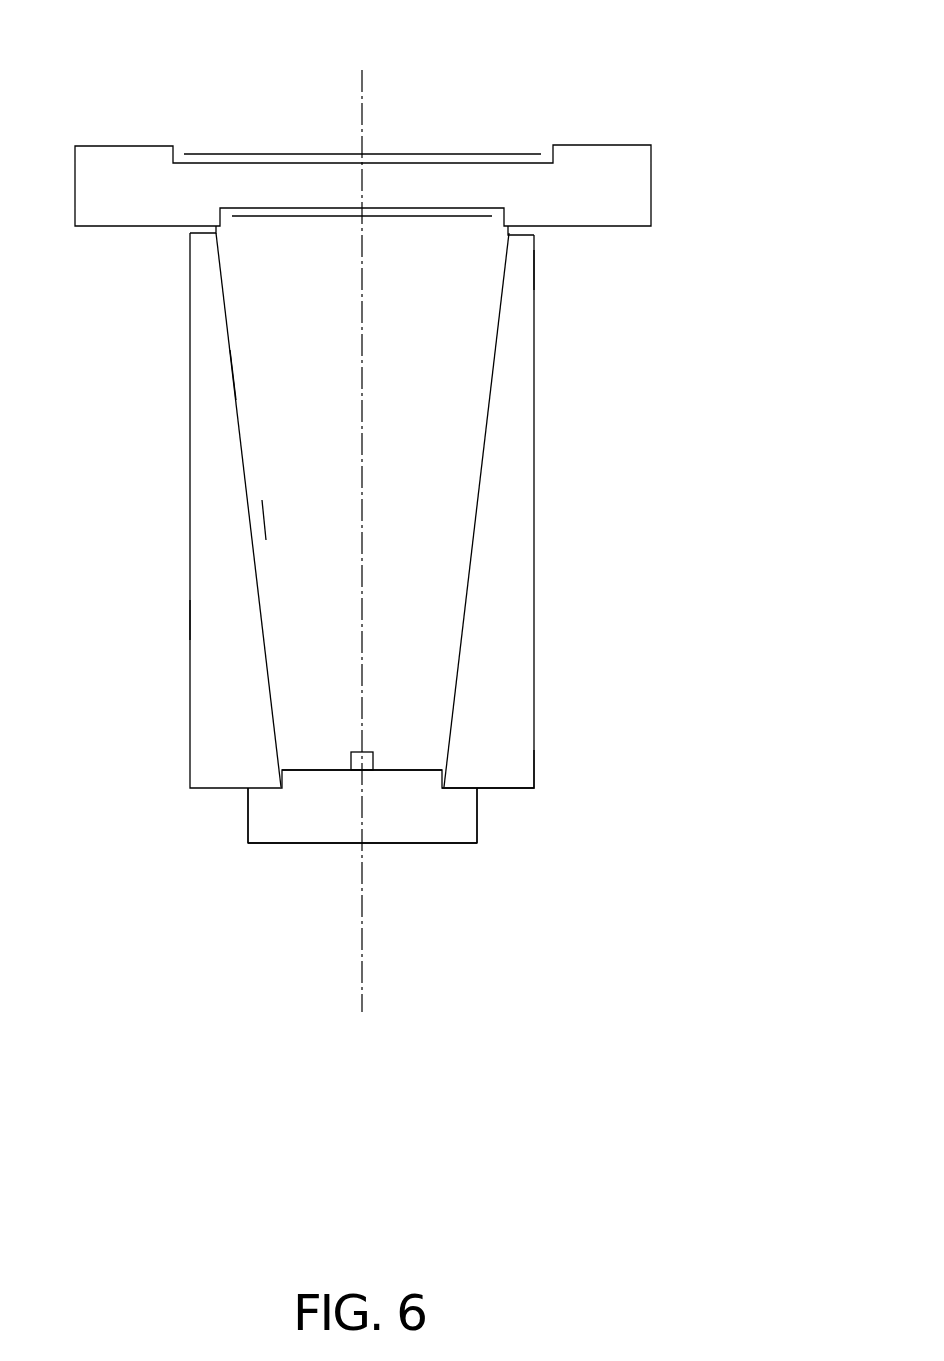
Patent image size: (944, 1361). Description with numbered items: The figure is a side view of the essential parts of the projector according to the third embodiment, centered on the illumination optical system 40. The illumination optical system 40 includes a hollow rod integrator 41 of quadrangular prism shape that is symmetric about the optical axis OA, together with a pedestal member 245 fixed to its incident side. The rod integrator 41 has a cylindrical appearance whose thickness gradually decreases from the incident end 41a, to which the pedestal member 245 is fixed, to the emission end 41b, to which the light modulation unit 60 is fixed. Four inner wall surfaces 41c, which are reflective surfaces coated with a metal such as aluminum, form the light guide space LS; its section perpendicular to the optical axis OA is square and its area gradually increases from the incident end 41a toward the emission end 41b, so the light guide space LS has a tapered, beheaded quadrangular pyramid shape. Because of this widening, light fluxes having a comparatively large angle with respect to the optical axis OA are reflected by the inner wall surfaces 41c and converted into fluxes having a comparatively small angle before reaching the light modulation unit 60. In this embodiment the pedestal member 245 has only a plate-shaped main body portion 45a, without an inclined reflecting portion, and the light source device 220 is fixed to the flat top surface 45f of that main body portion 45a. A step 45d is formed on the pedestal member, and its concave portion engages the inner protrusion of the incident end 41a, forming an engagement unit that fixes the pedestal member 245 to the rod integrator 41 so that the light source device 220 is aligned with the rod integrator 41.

The illumination optical system 40 is at (160, 605).
The rod integrator 41 is at (207, 458).
The incident end 41a is at (527, 758).
The emission end 41b is at (527, 268).
The inner wall surfaces 41c is at (238, 398).
The main body portion 45a is at (417, 830).
The step 45d is at (270, 795).
The top surface 45f is at (412, 770).
The light modulation unit 60 is at (636, 124).
The light source device 220 is at (373, 752).
The pedestal member 245 is at (260, 863).
The light guide space LS is at (290, 523).
The optical axis OA is at (363, 418).